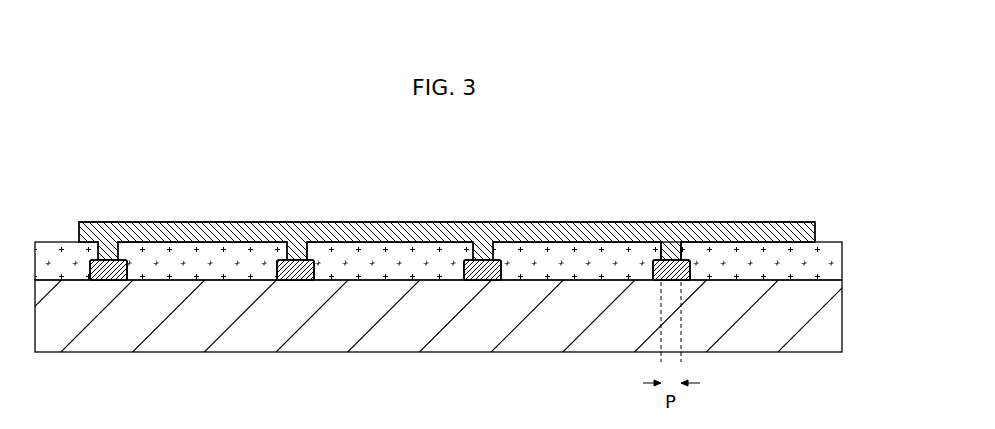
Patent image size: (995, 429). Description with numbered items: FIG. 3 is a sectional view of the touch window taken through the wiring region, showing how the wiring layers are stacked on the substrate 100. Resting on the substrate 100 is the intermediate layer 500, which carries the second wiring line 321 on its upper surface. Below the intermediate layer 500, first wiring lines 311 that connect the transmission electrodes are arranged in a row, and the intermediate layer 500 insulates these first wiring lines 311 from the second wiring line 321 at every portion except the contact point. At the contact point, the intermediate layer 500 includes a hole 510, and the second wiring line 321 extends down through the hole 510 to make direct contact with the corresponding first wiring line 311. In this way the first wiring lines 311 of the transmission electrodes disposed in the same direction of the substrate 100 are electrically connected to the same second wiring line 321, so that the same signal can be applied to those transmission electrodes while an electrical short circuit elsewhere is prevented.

The substrate 100 is at (567, 322).
The intermediate layer 500 is at (393, 265).
The second wiring line 321 is at (547, 223).
The hole 510 is at (670, 250).
The first wiring line 311 is at (690, 268).